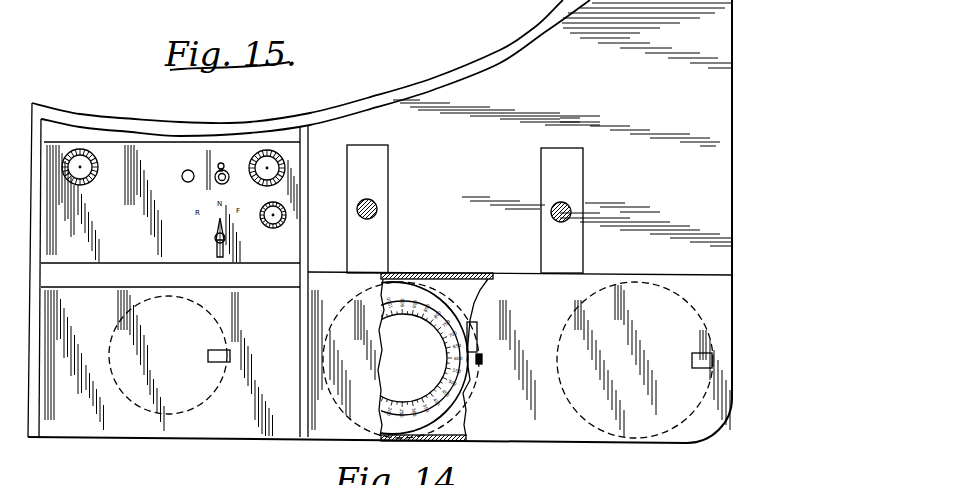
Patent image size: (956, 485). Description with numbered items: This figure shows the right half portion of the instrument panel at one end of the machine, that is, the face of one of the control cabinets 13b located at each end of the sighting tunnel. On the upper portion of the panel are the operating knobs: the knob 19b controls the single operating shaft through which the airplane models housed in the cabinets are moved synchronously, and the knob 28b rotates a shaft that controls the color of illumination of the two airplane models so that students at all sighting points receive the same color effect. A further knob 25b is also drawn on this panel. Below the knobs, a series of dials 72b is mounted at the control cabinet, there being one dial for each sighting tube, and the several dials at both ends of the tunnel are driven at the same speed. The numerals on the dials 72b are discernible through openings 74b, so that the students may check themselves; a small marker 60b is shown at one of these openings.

The control cabinet 13b is at (63, 440).
The knob 19b is at (90, 177).
The control knob 25b is at (272, 222).
The knob 28b is at (267, 150).
The indicator marker 60b is at (219, 356).
The dial 72b is at (203, 400).
The opening 74b is at (210, 355).